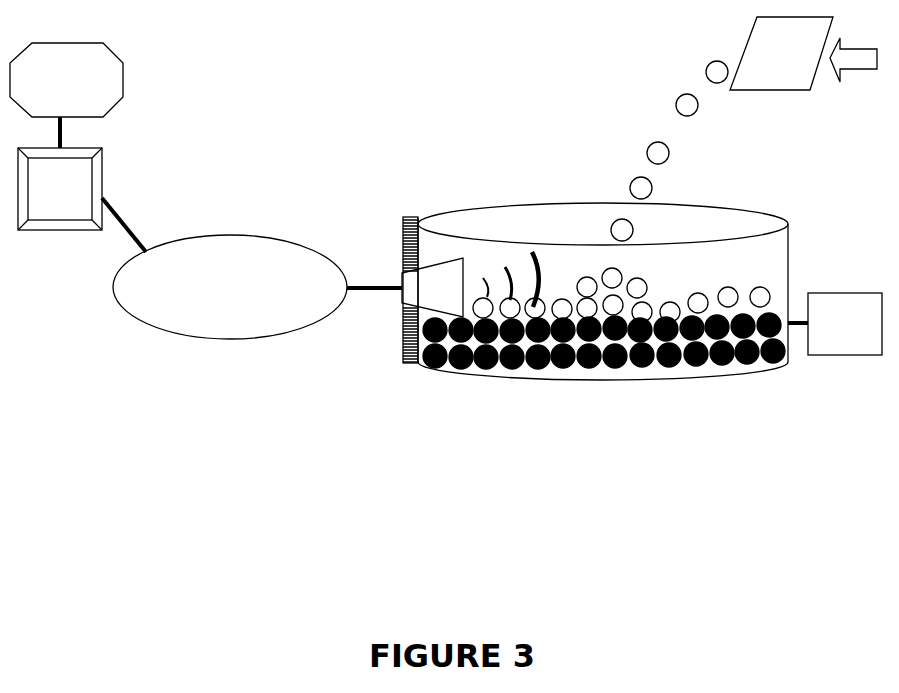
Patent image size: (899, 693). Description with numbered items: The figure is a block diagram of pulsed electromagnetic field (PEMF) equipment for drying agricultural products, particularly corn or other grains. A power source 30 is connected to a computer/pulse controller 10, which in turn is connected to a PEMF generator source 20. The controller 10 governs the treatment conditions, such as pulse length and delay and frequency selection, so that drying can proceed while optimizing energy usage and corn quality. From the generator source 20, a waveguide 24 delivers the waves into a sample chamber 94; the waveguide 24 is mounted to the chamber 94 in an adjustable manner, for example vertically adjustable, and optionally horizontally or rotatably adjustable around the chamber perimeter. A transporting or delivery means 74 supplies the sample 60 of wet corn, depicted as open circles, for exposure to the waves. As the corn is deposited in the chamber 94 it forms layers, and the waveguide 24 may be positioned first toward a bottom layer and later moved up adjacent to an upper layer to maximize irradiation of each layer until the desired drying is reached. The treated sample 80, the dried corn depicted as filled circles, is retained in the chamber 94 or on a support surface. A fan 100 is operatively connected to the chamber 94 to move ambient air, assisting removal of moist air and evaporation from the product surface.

The computer/pulse controller 10 is at (82, 200).
The PEMF generator source 20 is at (257, 287).
The waveguide 24 is at (470, 284).
The power source 30 is at (66, 95).
The sample 60 is at (765, 280).
The transporting or delivery means 74 is at (744, 129).
The treated sample 80 is at (777, 308).
The sample chamber 94 is at (595, 291).
The fan 100 is at (835, 324).